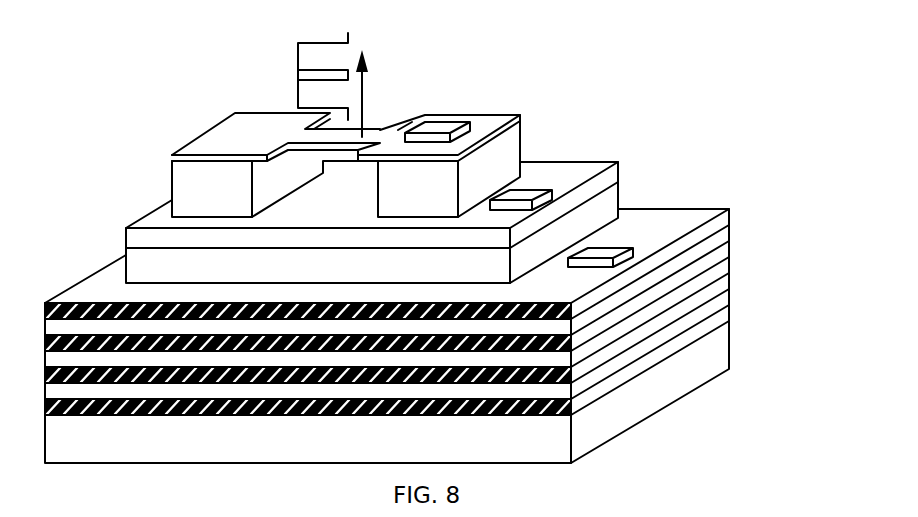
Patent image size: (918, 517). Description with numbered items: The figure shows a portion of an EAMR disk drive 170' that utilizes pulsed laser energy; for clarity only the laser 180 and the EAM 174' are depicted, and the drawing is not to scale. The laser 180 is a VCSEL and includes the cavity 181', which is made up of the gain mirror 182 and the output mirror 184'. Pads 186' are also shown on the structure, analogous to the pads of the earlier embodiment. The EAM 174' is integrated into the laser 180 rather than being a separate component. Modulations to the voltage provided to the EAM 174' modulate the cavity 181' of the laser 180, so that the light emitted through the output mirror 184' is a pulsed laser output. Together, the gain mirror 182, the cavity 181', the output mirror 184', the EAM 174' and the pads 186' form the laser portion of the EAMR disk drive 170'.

The EAMR disk drive 170' is at (341, 129).
The EAM 174' is at (412, 208).
The laser 180 is at (438, 234).
The cavity 181' is at (255, 183).
The gain mirror 182 is at (749, 289).
The output mirror 184' is at (494, 151).
The pads 186' is at (580, 161).